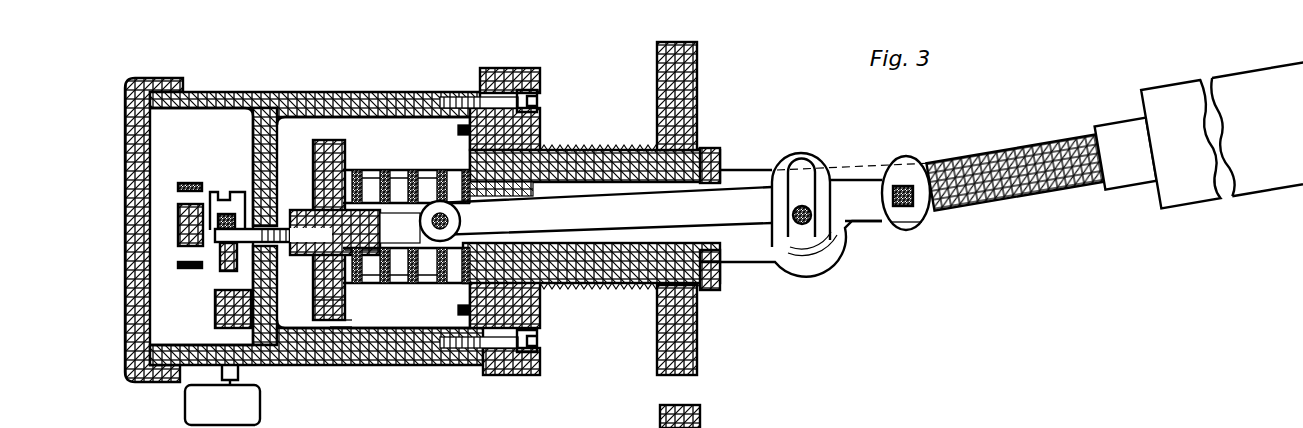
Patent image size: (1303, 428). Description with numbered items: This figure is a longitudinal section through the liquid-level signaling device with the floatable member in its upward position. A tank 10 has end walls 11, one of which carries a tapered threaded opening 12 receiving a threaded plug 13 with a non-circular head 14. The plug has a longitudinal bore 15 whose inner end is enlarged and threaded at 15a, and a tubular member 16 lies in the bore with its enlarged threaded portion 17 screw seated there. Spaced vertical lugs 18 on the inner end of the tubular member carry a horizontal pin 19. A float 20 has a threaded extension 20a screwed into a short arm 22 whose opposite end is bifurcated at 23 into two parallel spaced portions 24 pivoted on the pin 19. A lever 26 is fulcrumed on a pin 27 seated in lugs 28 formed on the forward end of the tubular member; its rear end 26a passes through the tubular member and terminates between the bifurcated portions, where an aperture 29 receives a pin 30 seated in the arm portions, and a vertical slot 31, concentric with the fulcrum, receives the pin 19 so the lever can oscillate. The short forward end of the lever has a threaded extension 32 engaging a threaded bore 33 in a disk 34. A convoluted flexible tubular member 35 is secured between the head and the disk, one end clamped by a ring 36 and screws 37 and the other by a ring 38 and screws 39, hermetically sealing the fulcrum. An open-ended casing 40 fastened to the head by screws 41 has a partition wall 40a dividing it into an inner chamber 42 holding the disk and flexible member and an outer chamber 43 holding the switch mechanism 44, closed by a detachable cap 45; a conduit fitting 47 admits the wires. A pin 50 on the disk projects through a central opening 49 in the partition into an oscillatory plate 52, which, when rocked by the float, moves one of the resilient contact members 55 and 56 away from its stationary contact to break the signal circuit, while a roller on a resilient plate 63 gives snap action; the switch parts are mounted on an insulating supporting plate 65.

The tank 10 is at (693, 55).
The end walls 11 is at (780, 114).
The threaded opening 12 is at (697, 140).
The threaded plug 13 is at (565, 147).
The non-circular head 14 is at (372, 203).
The longitudinal bore 15 is at (620, 312).
The enlarged threaded portion of bore 15a is at (720, 151).
The tubular member 16 is at (592, 268).
The enlarged threaded portion 17 is at (714, 292).
The lugs 18 is at (765, 176).
The pin 19 is at (835, 245).
The float 20 is at (1197, 180).
The threaded extension 20a is at (1108, 198).
The short arm 22 is at (1018, 200).
The bifurcated end 23 is at (935, 192).
The spaced portions 24 is at (872, 228).
The lever 26 is at (596, 214).
The rear end of lever 26a is at (870, 163).
The fulcrum pin 27 is at (412, 283).
The lugs 28 is at (425, 170).
The aperture 29 is at (918, 232).
The pin 30 is at (928, 162).
The slot 31 is at (807, 185).
The threaded extension 32 is at (312, 215).
The threaded bore 33 is at (320, 255).
The disk 34 is at (316, 298).
The flexible tubular member 35 is at (385, 165).
The ring 36 is at (535, 125).
The screws 37 is at (445, 335).
The ring 38 is at (348, 330).
The screws 39 is at (340, 330).
The casing 40 is at (310, 97).
The partition wall 40a is at (253, 148).
The screws 41 is at (520, 92).
The inner chamber 42 is at (318, 132).
The outer chamber 43 is at (182, 136).
The switch mechanism 44 is at (200, 285).
The cap 45 is at (138, 88).
The conduit fitting 47 is at (222, 395).
The central opening 49 is at (257, 217).
The pin 50 is at (284, 207).
The oscillatory plate 52 is at (227, 273).
The resilient contact member 55 is at (185, 266).
The resilient contact member 56 is at (187, 182).
The resilient plate 63 is at (220, 187).
The supporting plate 65 is at (178, 222).